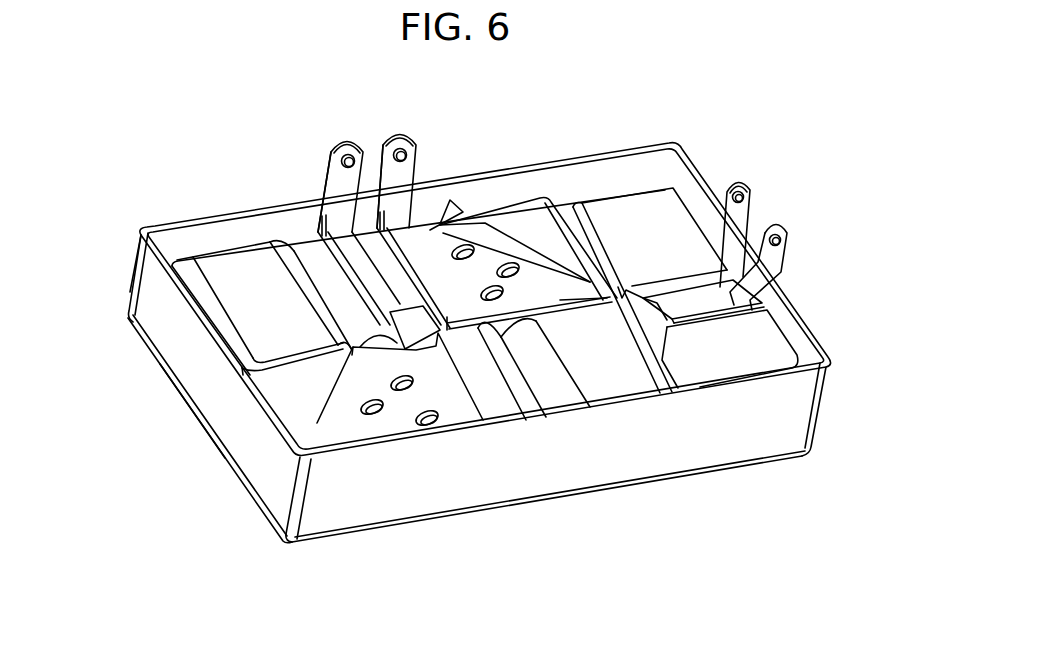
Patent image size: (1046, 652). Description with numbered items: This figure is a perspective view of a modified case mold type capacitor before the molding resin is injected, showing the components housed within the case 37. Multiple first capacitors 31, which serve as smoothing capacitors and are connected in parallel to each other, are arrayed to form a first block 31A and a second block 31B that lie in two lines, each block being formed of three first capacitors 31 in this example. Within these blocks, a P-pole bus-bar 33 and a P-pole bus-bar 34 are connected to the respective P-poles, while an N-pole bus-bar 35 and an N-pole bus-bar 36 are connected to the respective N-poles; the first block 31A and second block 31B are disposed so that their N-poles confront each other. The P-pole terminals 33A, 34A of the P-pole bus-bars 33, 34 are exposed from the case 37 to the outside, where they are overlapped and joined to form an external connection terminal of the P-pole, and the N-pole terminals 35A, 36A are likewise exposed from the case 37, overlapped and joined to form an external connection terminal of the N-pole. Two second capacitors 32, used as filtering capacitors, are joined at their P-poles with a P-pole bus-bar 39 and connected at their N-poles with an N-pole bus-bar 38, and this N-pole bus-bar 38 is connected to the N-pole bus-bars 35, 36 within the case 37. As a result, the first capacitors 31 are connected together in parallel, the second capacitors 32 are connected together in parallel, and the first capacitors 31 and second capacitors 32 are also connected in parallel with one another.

The first capacitor 31 is at (597, 395).
The first block 31A is at (96, 270).
The second block 31B is at (232, 488).
The second capacitor 32 is at (737, 362).
The P-pole bus-bar 33 is at (383, 425).
The P-pole terminal 33A is at (340, 150).
The P-pole bus-bar 34 is at (320, 220).
The P-pole terminal 34A is at (336, 192).
The N-pole bus-bar 35 is at (435, 248).
The N-pole terminal 35A is at (395, 137).
The N-pole bus-bar 36 is at (527, 250).
The N-pole terminal 36A is at (391, 186).
The case 37 is at (693, 150).
The N-pole bus-bar 38 is at (713, 308).
The P-pole bus-bar 39 is at (735, 220).